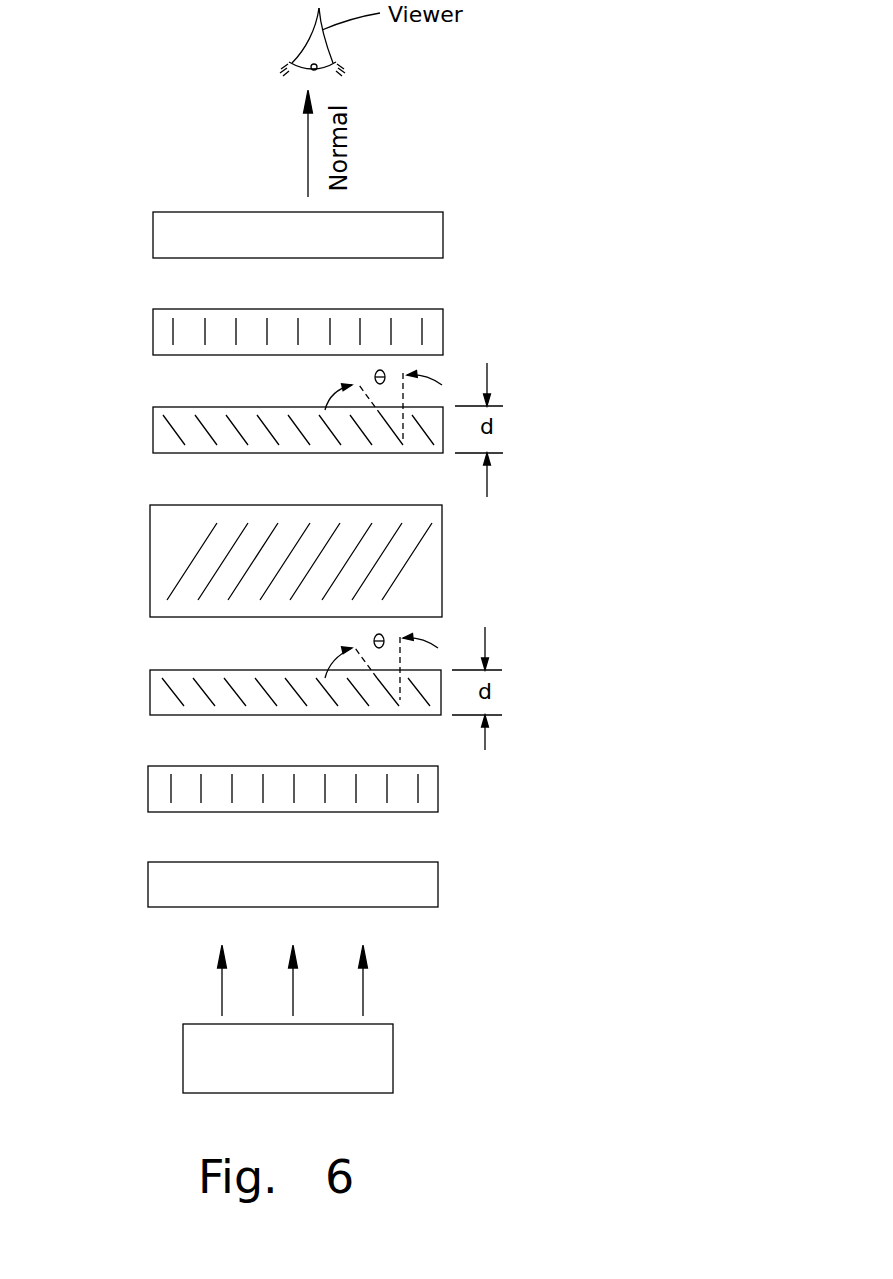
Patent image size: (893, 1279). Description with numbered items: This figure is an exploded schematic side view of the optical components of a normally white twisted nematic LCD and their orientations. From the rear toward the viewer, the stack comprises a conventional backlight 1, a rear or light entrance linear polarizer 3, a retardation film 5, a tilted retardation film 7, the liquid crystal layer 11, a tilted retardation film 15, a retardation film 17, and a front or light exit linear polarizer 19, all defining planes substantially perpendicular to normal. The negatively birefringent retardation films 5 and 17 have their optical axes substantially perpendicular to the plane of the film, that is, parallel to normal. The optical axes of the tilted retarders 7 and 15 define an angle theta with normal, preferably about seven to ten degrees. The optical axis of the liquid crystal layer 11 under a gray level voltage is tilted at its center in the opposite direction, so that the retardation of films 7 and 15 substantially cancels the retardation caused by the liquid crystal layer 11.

The backlight 1 is at (378, 1076).
The rear linear polarizer 3 is at (407, 879).
The retardation film 5 is at (428, 788).
The tilted retardation film 7 is at (160, 692).
The liquid crystal layer 11 is at (437, 572).
The tilted retardation film 15 is at (162, 424).
The retardation film 17 is at (434, 328).
The front linear polarizer 19 is at (435, 233).